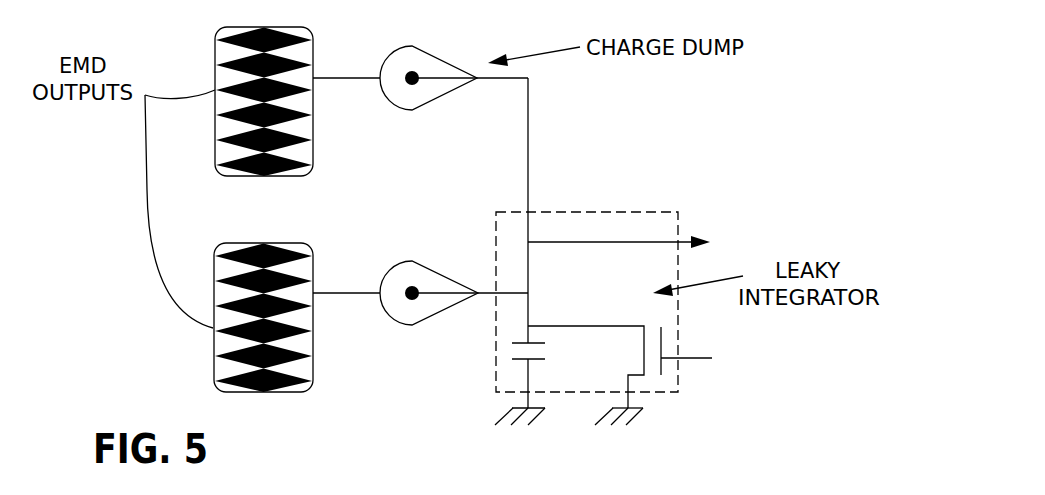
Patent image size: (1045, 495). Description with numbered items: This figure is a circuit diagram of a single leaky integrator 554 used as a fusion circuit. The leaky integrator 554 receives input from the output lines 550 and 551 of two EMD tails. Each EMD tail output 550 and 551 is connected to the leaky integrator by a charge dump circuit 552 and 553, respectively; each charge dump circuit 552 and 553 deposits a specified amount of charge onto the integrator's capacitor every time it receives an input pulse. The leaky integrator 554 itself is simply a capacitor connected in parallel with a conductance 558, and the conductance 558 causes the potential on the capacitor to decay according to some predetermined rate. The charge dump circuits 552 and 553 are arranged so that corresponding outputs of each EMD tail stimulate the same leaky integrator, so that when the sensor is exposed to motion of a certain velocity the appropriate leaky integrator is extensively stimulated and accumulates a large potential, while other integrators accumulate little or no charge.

The output line of EMD tail 550 is at (263, 28).
The output line of EMD tail 551 is at (263, 243).
The charge dump circuit 552 is at (435, 57).
The charge dump circuit 553 is at (447, 310).
The leaky integrator 554 is at (593, 211).
The conductance 558 is at (661, 367).